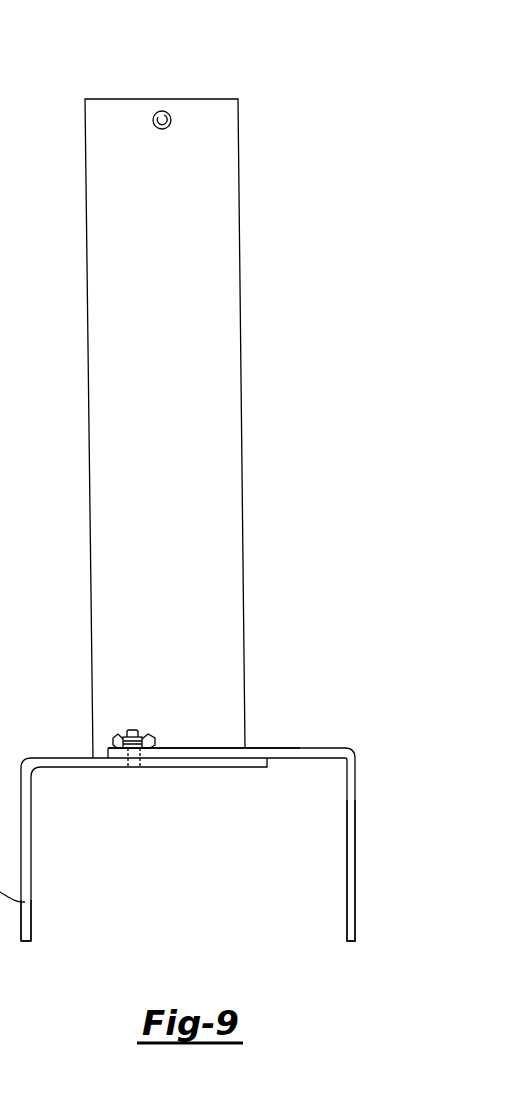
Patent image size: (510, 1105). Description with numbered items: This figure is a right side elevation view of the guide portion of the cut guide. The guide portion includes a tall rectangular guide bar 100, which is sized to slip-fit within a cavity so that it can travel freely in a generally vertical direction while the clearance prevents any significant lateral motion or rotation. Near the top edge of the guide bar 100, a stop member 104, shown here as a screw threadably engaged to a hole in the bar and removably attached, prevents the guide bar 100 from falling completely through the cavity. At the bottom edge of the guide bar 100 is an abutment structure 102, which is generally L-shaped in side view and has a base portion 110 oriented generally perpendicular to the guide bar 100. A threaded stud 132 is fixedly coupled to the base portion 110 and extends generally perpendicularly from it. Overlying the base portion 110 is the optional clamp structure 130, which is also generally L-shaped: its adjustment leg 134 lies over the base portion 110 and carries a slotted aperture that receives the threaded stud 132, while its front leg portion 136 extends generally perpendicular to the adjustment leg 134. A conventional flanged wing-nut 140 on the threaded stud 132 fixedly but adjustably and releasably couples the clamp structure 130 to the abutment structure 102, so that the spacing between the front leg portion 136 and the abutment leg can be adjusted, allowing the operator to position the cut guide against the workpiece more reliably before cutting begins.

The guide bar 100 is at (222, 347).
The abutment structure 102 is at (87, 808).
The stop member 104 is at (157, 112).
The base portion 110 is at (63, 757).
The clamp structure 130 is at (256, 800).
The threaded stud 132 is at (135, 729).
The adjustment leg 134 is at (297, 764).
The front leg portion 136 is at (352, 860).
The flanged wing-nut 140 is at (152, 740).